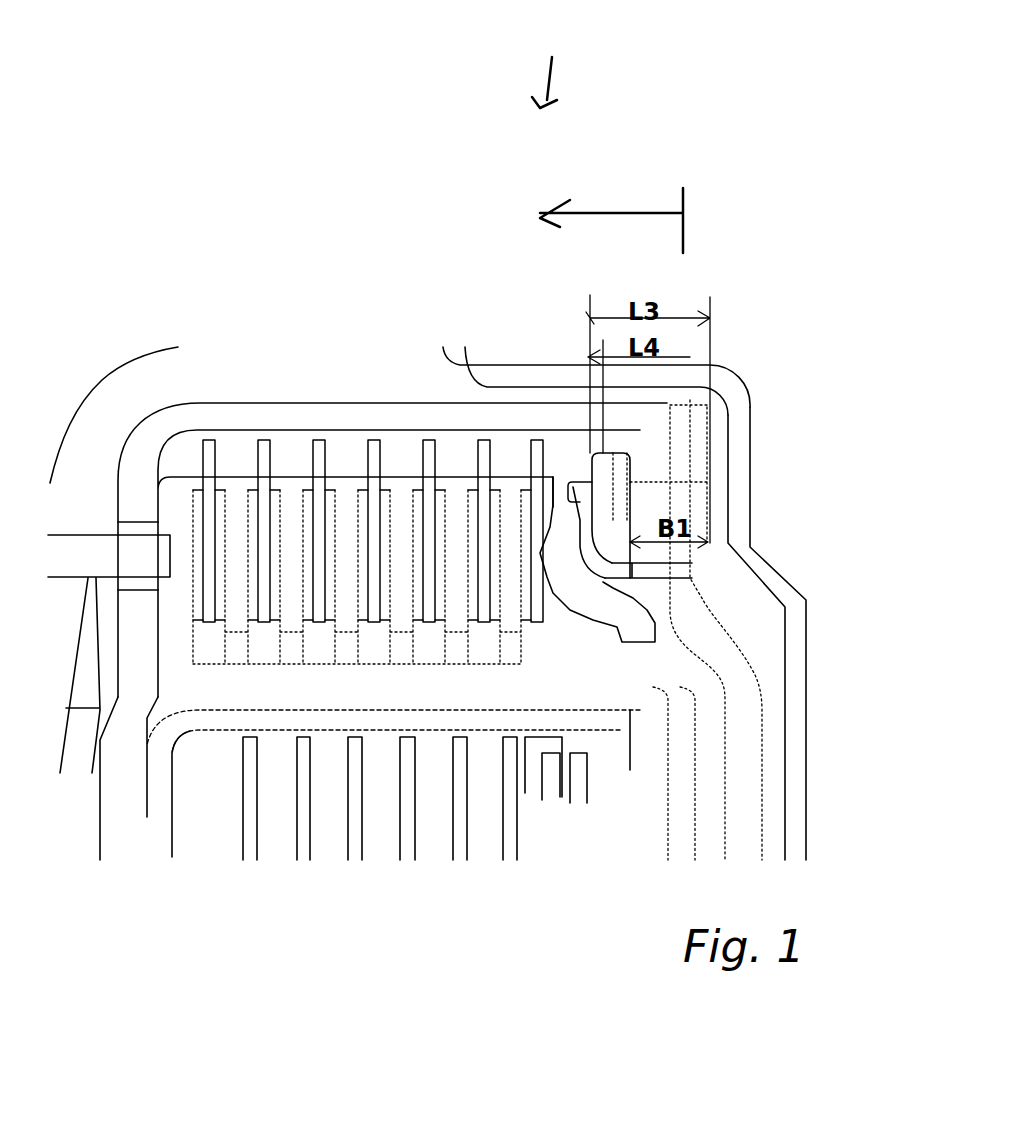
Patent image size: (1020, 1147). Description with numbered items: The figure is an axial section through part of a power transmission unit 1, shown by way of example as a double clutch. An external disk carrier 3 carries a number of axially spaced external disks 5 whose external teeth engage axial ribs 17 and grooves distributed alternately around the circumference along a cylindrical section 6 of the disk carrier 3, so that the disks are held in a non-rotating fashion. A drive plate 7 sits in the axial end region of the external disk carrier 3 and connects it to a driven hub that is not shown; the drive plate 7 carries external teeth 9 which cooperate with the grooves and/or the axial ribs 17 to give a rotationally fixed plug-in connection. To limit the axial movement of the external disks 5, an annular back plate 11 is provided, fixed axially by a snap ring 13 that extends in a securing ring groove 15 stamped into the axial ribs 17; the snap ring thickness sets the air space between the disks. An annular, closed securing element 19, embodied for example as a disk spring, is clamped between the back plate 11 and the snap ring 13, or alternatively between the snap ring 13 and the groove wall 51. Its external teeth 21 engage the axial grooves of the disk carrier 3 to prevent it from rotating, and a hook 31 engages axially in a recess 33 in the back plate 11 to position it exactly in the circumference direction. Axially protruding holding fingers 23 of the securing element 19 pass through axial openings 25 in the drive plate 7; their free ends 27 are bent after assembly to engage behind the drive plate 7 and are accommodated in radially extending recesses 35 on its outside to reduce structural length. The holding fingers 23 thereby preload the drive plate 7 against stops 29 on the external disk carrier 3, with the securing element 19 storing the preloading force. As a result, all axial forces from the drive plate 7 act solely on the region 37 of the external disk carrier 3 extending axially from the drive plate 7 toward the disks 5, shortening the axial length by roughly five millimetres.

The power transmission unit 1 is at (545, 56).
The external disk carrier 3 is at (297, 457).
The external disks 5 is at (374, 440).
The cylindrical section 6 is at (418, 420).
The drive plate 7 is at (737, 680).
The external teeth 9 is at (697, 427).
The back plate 11 is at (562, 528).
The snap ring 13 is at (633, 457).
The securing ring groove 15 is at (622, 458).
The axial ribs 17 is at (187, 475).
The securing element 19 is at (635, 520).
The external teeth 21 is at (583, 463).
The holding fingers 23 is at (683, 580).
The axial openings 25 is at (690, 588).
The free ends 27 is at (660, 572).
The stops 29 is at (627, 473).
The hook 31 is at (575, 500).
The recess 33 is at (556, 504).
The radially extending recesses 35 is at (697, 597).
The region 37 is at (623, 213).
The groove wall 51 is at (627, 545).